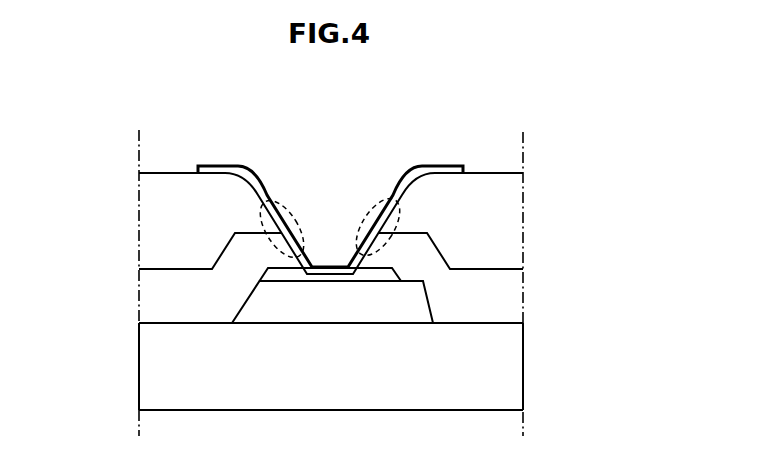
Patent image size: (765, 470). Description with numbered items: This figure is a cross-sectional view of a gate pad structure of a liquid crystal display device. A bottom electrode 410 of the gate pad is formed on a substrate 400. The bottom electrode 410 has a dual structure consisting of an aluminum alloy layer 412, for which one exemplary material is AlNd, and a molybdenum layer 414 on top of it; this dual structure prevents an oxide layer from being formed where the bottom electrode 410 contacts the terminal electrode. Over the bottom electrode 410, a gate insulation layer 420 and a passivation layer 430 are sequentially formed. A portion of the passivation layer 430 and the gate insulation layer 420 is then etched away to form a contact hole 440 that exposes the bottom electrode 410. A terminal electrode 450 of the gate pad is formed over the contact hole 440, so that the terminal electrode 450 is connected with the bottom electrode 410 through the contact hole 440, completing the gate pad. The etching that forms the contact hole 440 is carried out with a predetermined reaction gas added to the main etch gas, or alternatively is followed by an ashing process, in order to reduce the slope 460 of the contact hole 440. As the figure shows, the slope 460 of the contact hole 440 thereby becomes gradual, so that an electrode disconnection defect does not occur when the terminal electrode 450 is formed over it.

The substrate 400 is at (150, 362).
The bottom electrode 410 is at (432, 291).
The aluminum alloy layer 412 is at (403, 304).
The molybdenum layer 414 is at (391, 272).
The gate insulation layer 420 is at (150, 302).
The passivation layer 430 is at (150, 232).
The contact hole 440 is at (334, 214).
The terminal electrode 450 is at (443, 167).
The slope 460 is at (285, 200).